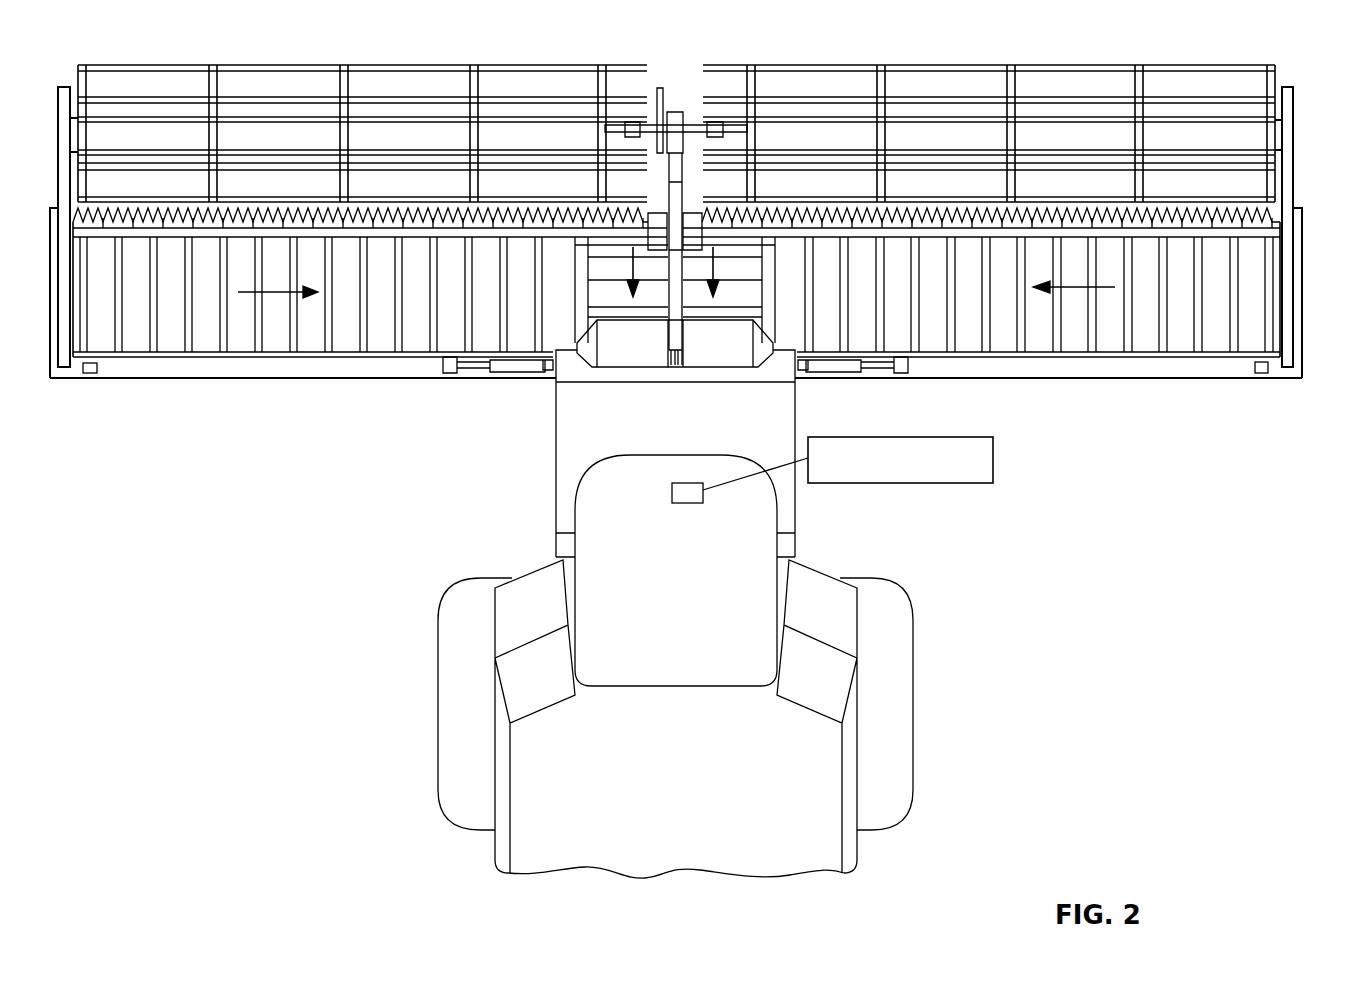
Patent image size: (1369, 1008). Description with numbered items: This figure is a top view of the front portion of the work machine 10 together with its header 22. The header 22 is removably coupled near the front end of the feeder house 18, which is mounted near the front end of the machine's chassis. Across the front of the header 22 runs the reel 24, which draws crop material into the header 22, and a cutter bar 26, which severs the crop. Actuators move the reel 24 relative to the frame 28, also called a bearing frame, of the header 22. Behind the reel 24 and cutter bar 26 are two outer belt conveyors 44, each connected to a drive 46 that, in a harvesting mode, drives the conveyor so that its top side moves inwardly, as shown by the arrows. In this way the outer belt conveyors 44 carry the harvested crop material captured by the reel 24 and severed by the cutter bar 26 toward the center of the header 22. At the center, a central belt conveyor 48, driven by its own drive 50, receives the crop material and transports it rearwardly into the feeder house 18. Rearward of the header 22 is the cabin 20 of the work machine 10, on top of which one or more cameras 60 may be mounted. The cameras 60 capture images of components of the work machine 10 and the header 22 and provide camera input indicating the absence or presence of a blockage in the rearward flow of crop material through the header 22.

The work machine 10 is at (950, 721).
The feeder house 18 is at (796, 490).
The cabin 20 is at (646, 476).
The header 22 is at (1312, 319).
The reel 24 is at (495, 65).
The cutter bar 26 is at (1240, 213).
The frame 28 is at (1032, 379).
The outer belt conveyors 44 is at (356, 322).
The drive 46 is at (91, 374).
The central belt conveyor 48 is at (600, 268).
The drive 50 is at (770, 238).
The cameras 60 is at (862, 437).